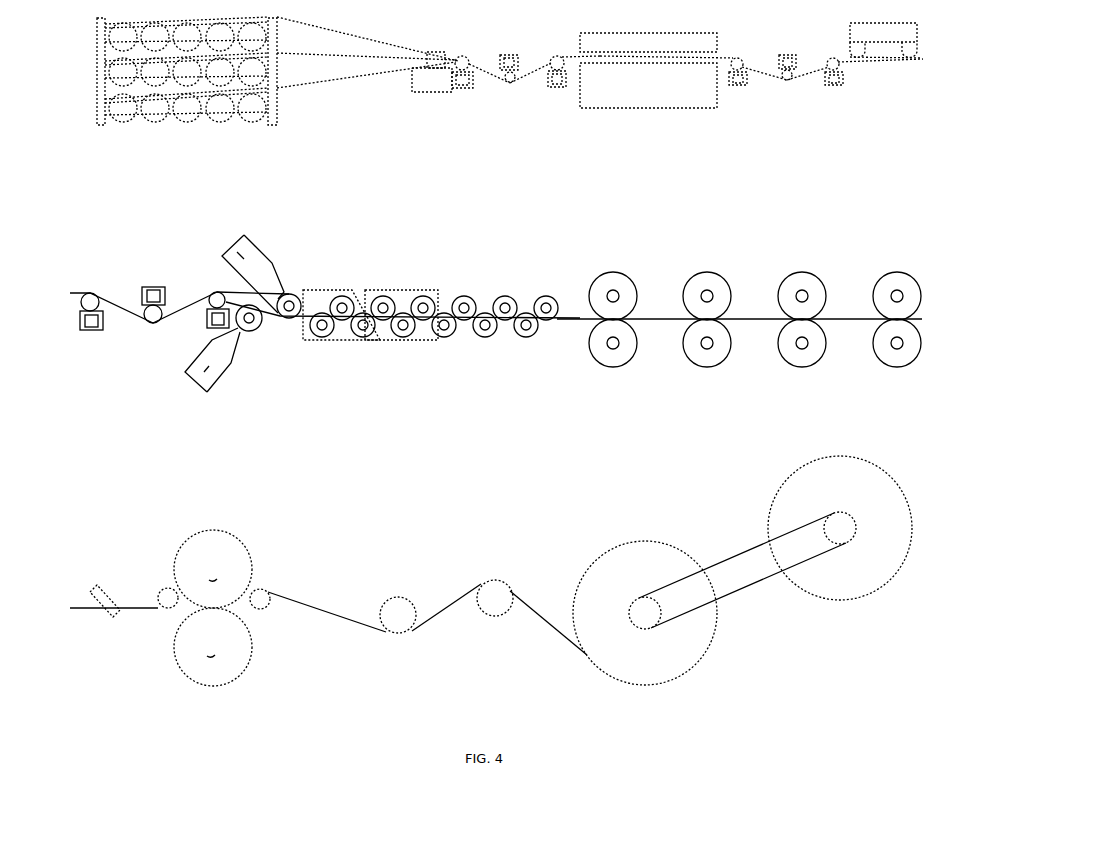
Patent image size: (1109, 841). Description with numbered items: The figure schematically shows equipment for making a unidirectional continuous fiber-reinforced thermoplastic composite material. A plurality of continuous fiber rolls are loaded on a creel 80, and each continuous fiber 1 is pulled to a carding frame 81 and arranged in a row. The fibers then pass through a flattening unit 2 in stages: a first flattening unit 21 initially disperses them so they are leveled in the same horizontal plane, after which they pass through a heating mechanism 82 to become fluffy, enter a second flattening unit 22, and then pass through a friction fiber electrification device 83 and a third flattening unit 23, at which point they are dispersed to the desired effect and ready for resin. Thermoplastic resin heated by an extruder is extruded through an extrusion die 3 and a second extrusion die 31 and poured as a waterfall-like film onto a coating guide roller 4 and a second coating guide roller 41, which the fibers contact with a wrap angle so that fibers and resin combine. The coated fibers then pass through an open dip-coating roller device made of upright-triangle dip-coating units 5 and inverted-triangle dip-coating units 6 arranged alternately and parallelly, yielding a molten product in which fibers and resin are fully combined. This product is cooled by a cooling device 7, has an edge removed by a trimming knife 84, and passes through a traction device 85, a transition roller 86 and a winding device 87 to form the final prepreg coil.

The continuous fiber 1 is at (193, 300).
The flattening unit 2 is at (203, 325).
The extrusion die 3 is at (258, 248).
The extrusion die 31 is at (222, 378).
The coating guide roller 4 is at (300, 297).
The coating guide roller 41 is at (254, 333).
The upright-triangle dip-coating unit 5 is at (348, 284).
The inverted-triangle dip-coating unit 6 is at (415, 288).
The cooling device 7 is at (607, 272).
The first flattening unit 21 is at (562, 88).
The second flattening unit 22 is at (838, 86).
The third flattening unit 23 is at (208, 328).
The creel 80 is at (205, 126).
The carding frame 81 is at (431, 102).
The heating mechanism 82 is at (650, 108).
The friction fiber electrification device 83 is at (885, 23).
The trimming knife 84 is at (108, 592).
The traction device 85 is at (252, 553).
The transition roller 86 is at (495, 616).
The winding device 87 is at (815, 593).